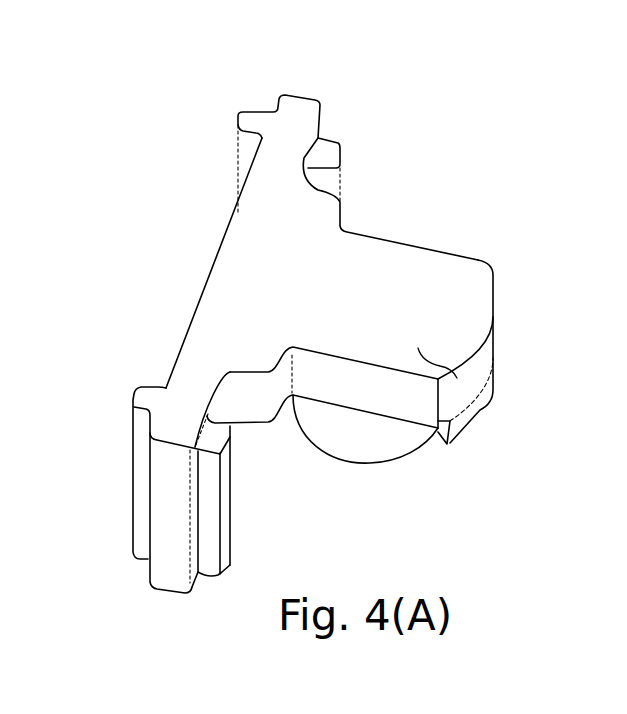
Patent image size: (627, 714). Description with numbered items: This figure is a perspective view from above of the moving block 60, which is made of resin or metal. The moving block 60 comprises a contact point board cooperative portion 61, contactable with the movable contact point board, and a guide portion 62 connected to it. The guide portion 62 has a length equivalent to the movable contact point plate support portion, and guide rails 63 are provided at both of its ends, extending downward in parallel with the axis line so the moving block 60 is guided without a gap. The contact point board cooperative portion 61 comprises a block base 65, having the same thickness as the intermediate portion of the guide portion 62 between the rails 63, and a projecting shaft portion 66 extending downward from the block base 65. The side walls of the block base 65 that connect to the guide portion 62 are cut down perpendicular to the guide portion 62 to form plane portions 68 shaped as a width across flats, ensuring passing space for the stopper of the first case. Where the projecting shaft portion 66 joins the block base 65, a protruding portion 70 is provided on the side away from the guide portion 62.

The moving block 60 is at (468, 228).
The contact point board cooperative portion 61 is at (495, 288).
The guide portion 62 is at (180, 350).
The guide rails 63 is at (133, 495).
The block base 65 is at (390, 256).
The projecting shaft portion 66 is at (343, 445).
The plane portions 68 is at (342, 377).
The protruding portion 70 is at (438, 438).